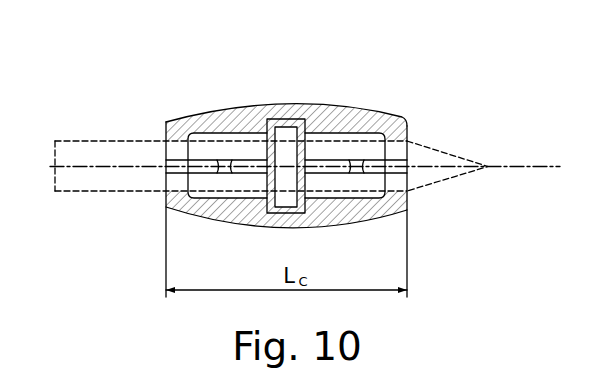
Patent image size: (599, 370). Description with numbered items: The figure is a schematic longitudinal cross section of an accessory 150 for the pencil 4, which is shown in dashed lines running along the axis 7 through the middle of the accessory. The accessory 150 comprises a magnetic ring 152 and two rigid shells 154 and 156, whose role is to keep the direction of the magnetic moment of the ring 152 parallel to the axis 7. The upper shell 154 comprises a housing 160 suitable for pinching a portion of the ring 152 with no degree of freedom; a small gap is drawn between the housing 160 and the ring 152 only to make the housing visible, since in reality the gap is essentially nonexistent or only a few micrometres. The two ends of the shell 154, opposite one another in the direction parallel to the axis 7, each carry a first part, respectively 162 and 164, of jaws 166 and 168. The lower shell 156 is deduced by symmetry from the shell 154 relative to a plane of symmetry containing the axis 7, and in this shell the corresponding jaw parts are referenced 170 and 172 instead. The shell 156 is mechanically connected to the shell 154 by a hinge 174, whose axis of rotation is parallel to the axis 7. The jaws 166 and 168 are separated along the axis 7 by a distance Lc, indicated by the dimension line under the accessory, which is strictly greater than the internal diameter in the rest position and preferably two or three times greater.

The pencil 4 is at (76, 141).
The axis 7 is at (532, 167).
The accessory 150 is at (206, 99).
The magnetic ring 152 is at (287, 135).
The shell 154 is at (350, 108).
The shell 156 is at (342, 220).
The housing 160 is at (268, 118).
The first part of jaw 162 is at (170, 120).
The first part of jaw 164 is at (401, 117).
The jaw 166 is at (160, 99).
The jaw 168 is at (413, 100).
The jaw part of second shell 170 is at (164, 208).
The jaw part of second shell 172 is at (404, 202).
The hinge 174 is at (229, 174).